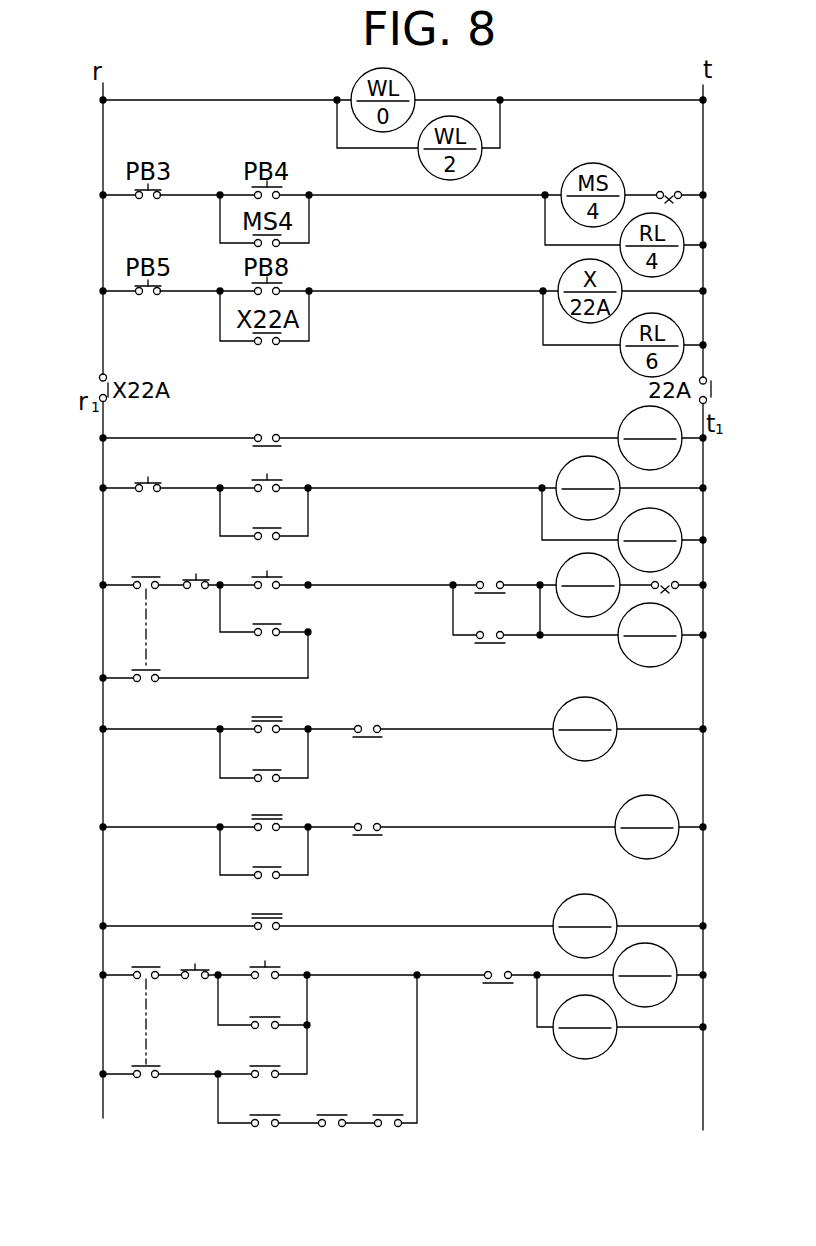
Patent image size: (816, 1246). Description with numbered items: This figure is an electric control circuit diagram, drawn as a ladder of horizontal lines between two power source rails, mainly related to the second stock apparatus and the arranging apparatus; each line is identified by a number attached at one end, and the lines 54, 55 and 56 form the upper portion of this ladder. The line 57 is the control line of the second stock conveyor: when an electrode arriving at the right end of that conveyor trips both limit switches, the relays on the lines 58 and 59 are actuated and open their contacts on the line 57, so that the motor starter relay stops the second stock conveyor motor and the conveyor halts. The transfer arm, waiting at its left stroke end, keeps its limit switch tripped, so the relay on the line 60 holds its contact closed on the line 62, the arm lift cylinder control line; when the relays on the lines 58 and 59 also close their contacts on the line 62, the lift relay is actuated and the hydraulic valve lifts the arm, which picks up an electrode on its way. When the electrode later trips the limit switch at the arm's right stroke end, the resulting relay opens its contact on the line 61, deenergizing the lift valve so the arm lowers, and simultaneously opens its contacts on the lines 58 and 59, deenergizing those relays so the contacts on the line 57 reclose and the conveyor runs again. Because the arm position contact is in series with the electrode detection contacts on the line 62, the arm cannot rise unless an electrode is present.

The line 54 is at (374, 438).
The line 55 is at (374, 511).
The line 56 is at (374, 611).
The control line of the second stock conveyor 57 is at (175, 679).
The line 58 is at (374, 736).
The line 59 is at (374, 833).
The line 60 is at (374, 922).
The line 61 is at (374, 999).
The arm lift cylinder control line 62 is at (229, 1051).